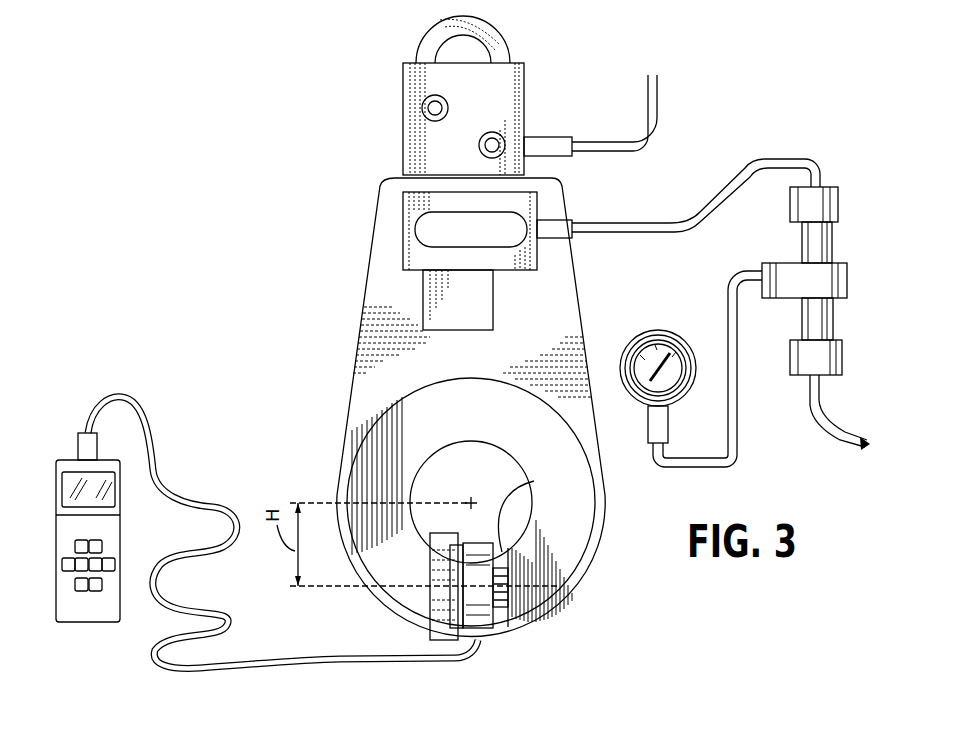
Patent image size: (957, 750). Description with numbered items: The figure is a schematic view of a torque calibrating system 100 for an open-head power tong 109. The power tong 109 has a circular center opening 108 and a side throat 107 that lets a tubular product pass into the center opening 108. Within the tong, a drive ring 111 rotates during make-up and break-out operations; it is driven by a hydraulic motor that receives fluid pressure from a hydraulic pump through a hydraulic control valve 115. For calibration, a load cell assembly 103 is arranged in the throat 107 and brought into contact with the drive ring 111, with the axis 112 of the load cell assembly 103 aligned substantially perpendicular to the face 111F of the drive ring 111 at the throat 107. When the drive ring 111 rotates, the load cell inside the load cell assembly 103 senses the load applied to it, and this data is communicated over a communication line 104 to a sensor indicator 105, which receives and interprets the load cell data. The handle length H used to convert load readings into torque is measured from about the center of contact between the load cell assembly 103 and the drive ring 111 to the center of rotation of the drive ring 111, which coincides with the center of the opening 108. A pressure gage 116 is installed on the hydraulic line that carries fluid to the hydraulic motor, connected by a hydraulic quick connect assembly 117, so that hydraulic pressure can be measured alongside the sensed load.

The torque calibrating system 100 is at (714, 126).
The load cell assembly 103 is at (480, 632).
The communication line 104 is at (317, 663).
The sensor indicator 105 is at (90, 624).
The throat 107 is at (500, 617).
The circular center opening 108 is at (430, 478).
The open-head power tong 109 is at (356, 328).
The drive ring 111 is at (573, 550).
The face of the drive ring 111F is at (533, 486).
The axis of the load cell assembly 112 is at (413, 592).
The hydraulic control valve 115 is at (402, 118).
The pressure gage 116 is at (658, 332).
The hydraulic quick connect assembly 117 is at (832, 242).